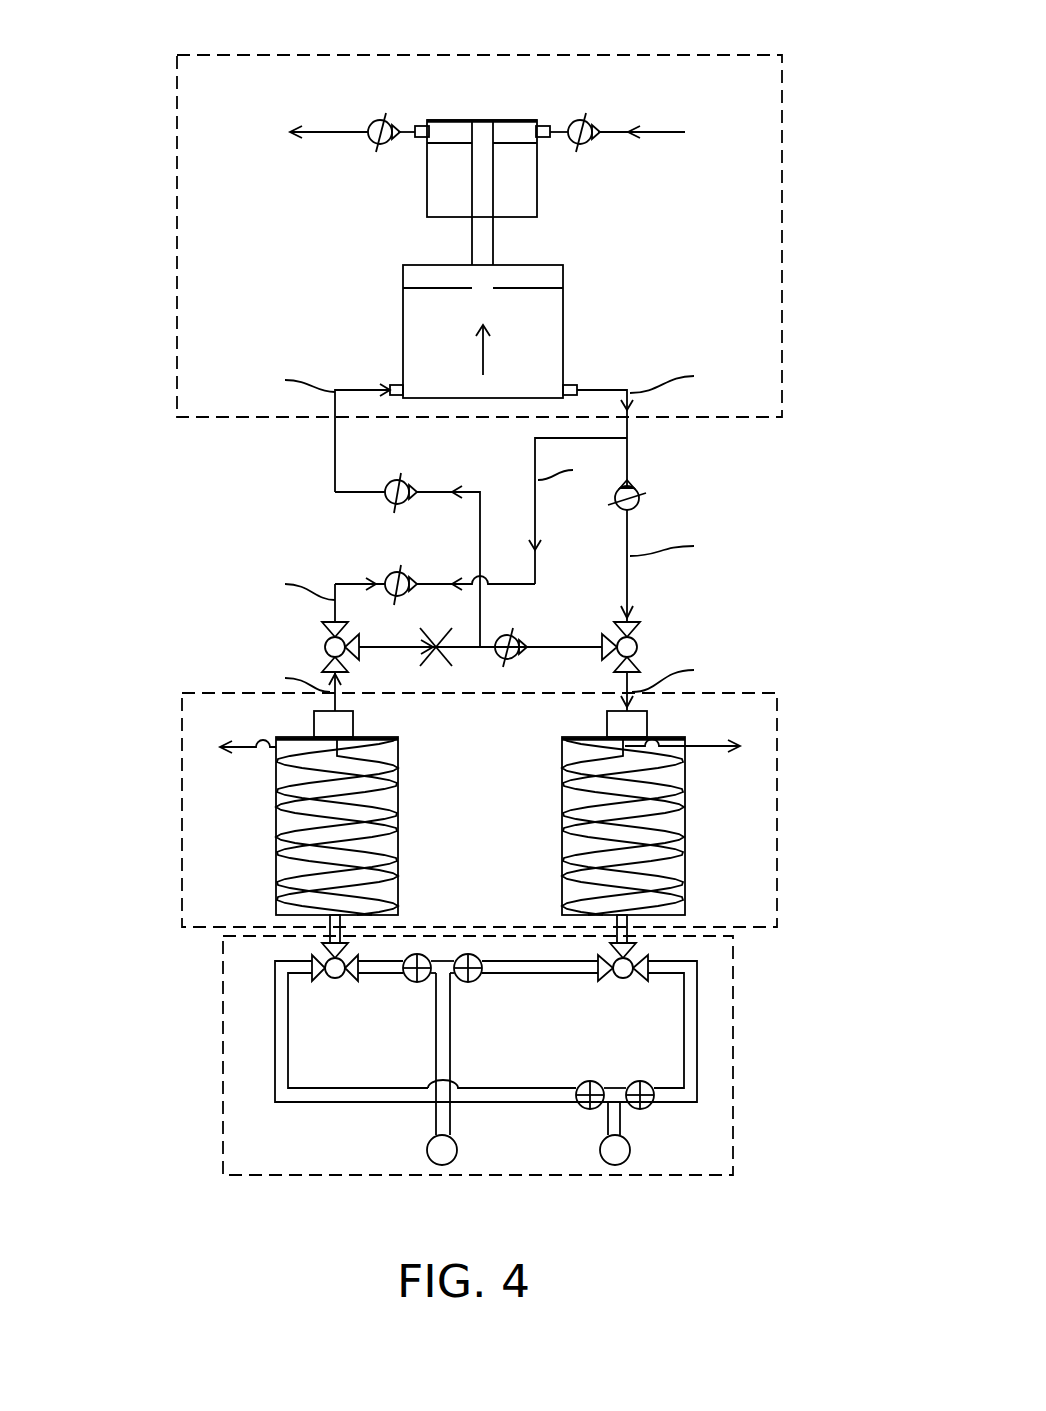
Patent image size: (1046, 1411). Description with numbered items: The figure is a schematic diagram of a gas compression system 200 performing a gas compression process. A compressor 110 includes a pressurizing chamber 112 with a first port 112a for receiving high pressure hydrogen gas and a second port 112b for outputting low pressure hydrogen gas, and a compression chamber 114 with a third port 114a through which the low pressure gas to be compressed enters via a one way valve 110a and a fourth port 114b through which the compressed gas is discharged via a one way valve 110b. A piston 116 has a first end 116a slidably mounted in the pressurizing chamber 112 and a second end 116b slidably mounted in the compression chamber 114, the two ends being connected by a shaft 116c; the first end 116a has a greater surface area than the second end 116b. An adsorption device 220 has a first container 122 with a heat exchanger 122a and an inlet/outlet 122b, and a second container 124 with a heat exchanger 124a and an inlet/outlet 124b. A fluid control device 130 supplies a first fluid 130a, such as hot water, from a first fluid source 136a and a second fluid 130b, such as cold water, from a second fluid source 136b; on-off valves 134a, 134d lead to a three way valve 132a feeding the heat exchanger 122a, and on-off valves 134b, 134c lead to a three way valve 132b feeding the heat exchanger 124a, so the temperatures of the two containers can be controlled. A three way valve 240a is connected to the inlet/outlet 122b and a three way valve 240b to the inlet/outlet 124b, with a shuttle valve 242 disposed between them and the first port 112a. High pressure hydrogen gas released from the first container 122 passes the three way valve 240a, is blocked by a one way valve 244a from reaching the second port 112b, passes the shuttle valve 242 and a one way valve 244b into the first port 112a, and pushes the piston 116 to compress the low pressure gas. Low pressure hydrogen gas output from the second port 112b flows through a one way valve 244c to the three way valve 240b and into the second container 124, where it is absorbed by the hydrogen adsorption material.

The gas compression system 200 is at (823, 1238).
The compressor 110 is at (782, 215).
The one way valve 110a is at (583, 128).
The one way valve 110b is at (378, 128).
The pressurizing chamber 112 is at (563, 293).
The first port 112a is at (392, 386).
The second port 112b is at (570, 386).
The compression chamber 114 is at (537, 170).
The third port 114a is at (543, 126).
The fourth port 114b is at (421, 126).
The piston 116 is at (104, 152).
The first end 116a is at (415, 277).
The second end 116b is at (452, 135).
The shaft 116c is at (478, 238).
The first container 122 is at (277, 847).
The heat exchanger 122a is at (288, 798).
The inlet/outlet 122b is at (325, 722).
The second container 124 is at (686, 849).
The heat exchanger 124a is at (688, 758).
The inlet/outlet 124b is at (637, 725).
The fluid control device 130 is at (732, 1046).
The first fluid 130a is at (280, 878).
The second fluid 130b is at (684, 880).
The three way valve 132a is at (310, 963).
The three way valve 132b is at (637, 947).
The on-off valve 134a is at (408, 983).
The on-off valve 134b is at (478, 983).
The on-off valve 134c is at (652, 1108).
The on-off valve 134d is at (580, 1109).
The first fluid source 136a is at (444, 1165).
The second fluid source 136b is at (605, 1163).
The adsorption device 220 is at (777, 817).
The three way valve 240a is at (325, 630).
The three way valve 240b is at (637, 630).
The shuttle valve 242 is at (420, 672).
The one way valve 244a is at (392, 580).
The one way valve 244b is at (392, 498).
The one way valve 244c is at (632, 500).